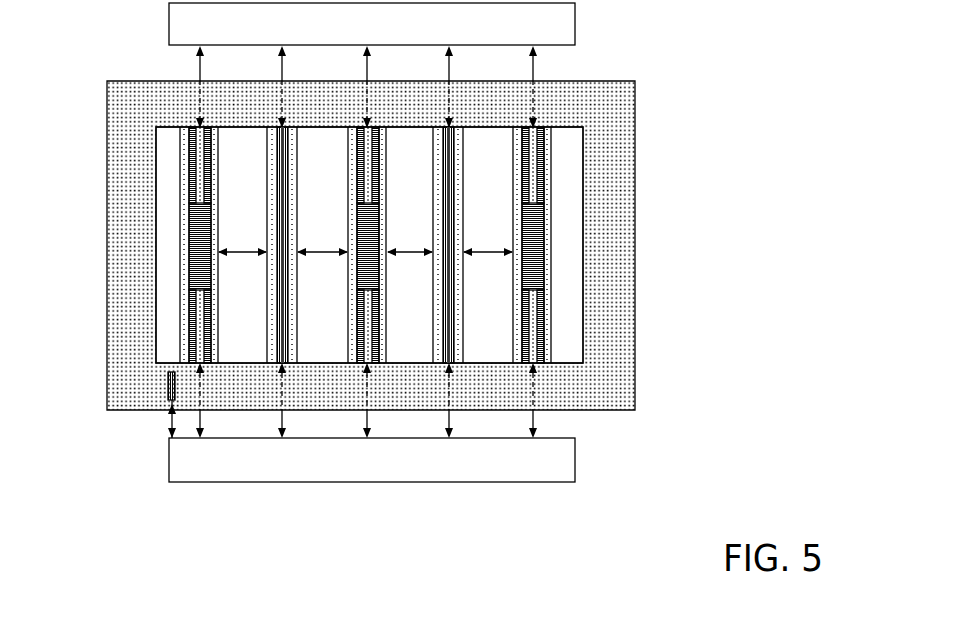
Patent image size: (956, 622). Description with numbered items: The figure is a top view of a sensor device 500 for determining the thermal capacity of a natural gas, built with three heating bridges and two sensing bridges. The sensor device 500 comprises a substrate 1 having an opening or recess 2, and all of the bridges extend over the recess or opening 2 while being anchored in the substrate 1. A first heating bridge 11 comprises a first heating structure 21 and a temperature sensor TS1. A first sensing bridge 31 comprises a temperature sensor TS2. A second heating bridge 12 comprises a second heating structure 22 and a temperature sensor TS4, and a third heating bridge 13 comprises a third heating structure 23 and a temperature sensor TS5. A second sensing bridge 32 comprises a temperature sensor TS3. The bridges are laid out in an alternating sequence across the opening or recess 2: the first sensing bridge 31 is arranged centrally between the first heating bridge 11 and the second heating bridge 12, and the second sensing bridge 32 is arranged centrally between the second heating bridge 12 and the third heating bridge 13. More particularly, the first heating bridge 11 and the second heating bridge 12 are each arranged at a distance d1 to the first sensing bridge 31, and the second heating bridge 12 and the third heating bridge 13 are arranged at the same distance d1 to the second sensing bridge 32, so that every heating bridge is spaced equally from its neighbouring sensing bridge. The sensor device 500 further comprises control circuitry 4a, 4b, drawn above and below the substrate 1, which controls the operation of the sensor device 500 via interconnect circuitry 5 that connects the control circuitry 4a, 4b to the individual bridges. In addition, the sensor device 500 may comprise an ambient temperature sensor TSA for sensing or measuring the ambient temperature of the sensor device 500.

The substrate 1 is at (127, 98).
The opening or recess 2 is at (575, 140).
The control circuitry 4a is at (575, 22).
The control circuitry 4b is at (575, 460).
The interconnect circuitry 5 is at (447, 67).
The first heating bridge 11 is at (180, 205).
The second heating bridge 12 is at (348, 186).
The third heating bridge 13 is at (540, 213).
The first heating structure 21 is at (192, 248).
The second heating structure 22 is at (360, 217).
The third heating structure 23 is at (540, 240).
The first sensing bridge 31 is at (267, 323).
The second sensing bridge 32 is at (433, 317).
The temperature sensor TS1 is at (192, 150).
The temperature sensor TS2 is at (282, 176).
The temperature sensor TS3 is at (445, 187).
The temperature sensor TS4 is at (358, 150).
The temperature sensor TS5 is at (535, 160).
The ambient temperature sensor TSA is at (167, 393).
The distance d1 is at (365, 239).
The sensor device 500 is at (833, 492).